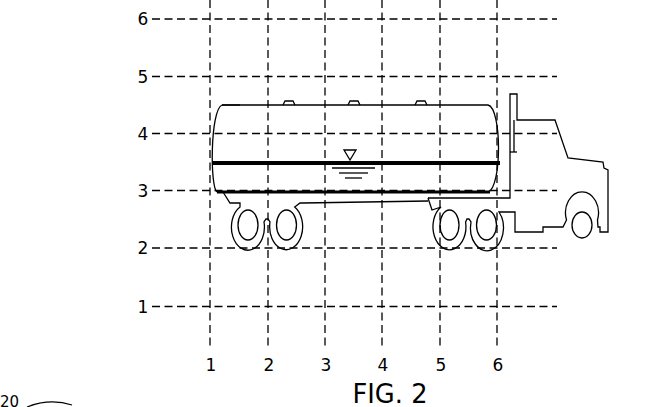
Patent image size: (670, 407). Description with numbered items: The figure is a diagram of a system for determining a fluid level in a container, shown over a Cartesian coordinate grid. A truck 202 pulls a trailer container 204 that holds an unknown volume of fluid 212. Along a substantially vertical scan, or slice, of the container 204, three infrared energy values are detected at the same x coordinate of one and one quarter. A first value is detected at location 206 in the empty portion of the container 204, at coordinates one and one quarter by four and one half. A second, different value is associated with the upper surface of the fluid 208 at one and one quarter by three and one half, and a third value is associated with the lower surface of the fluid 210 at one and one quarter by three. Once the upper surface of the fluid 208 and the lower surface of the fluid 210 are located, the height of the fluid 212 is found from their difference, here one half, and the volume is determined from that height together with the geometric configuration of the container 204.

The truck 202 is at (557, 120).
The trailer container 204 is at (478, 105).
The location of first infrared energy value 206 is at (220, 106).
The upper surface of the fluid 208 is at (213, 161).
The lower surface of the fluid 210 is at (222, 191).
The fluid 212 is at (458, 173).